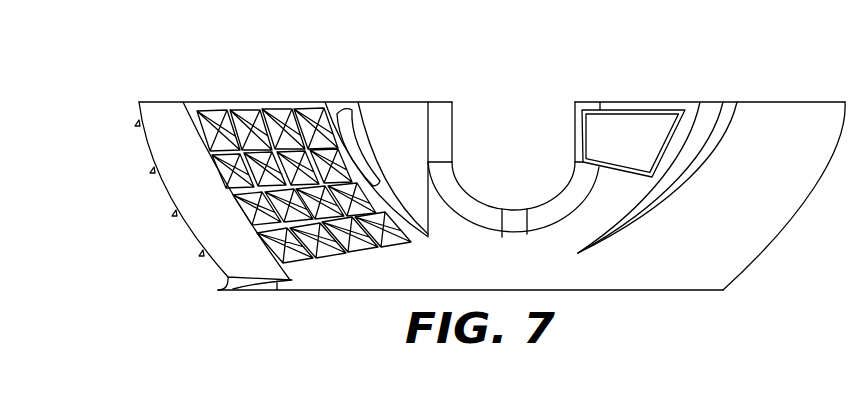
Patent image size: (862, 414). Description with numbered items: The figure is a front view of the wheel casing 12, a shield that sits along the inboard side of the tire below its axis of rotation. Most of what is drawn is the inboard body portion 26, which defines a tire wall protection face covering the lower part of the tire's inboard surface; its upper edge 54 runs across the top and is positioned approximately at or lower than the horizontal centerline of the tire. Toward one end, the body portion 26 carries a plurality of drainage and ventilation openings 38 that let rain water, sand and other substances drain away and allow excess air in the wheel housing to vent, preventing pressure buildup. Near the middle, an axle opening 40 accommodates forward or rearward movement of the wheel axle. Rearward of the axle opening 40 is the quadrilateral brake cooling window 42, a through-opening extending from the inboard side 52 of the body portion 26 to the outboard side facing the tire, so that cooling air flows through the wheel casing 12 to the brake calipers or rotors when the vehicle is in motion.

The wheel casing 12 is at (378, 58).
The inboard body portion 26 is at (733, 260).
The drainage and ventilation openings 38 is at (255, 130).
The axle opening 40 is at (493, 131).
The brake cooling window 42 is at (615, 127).
The inboard side 52 is at (605, 205).
The upper edge 54 is at (782, 102).